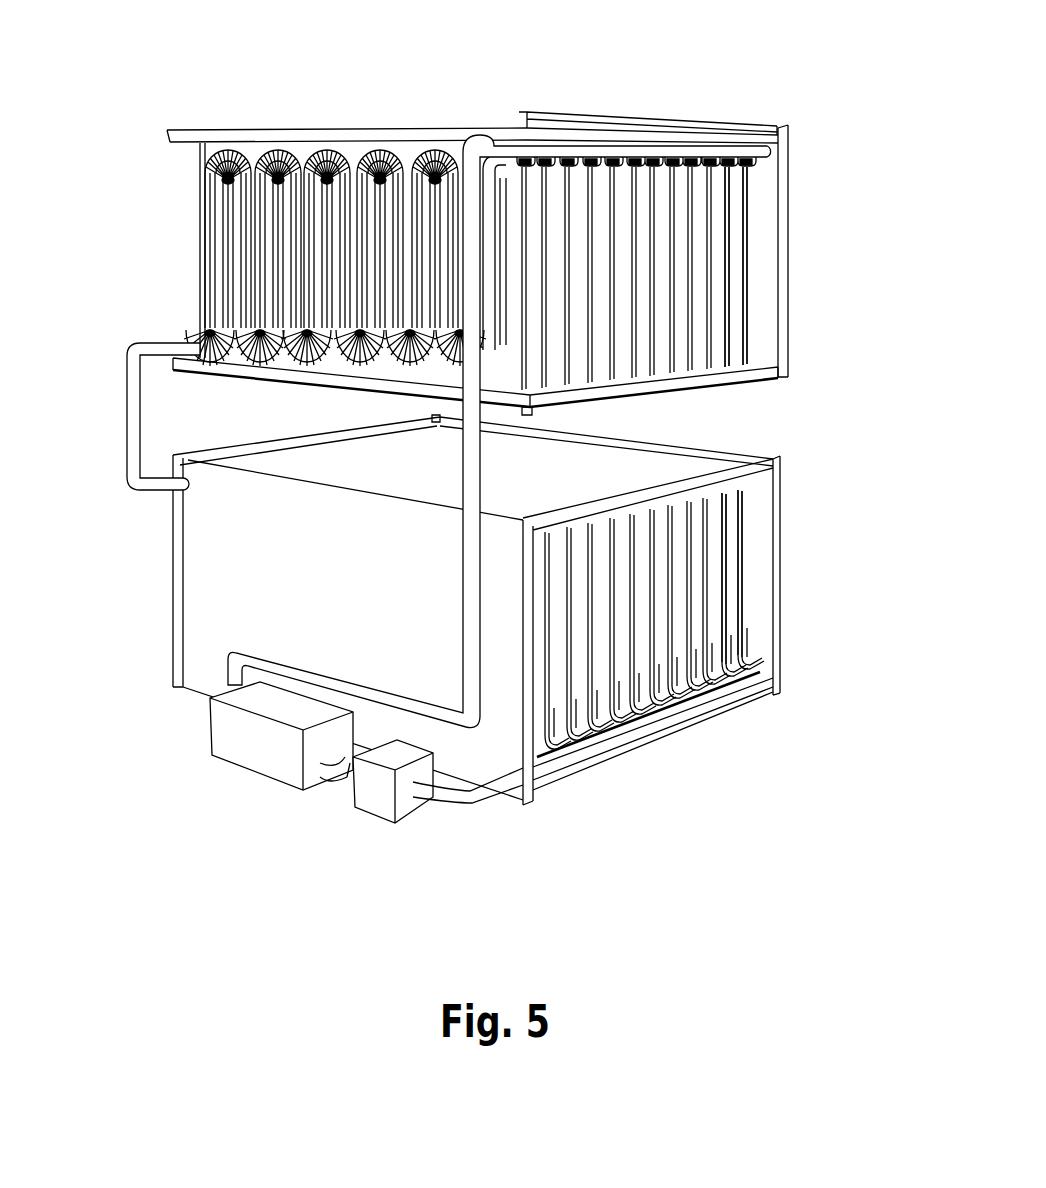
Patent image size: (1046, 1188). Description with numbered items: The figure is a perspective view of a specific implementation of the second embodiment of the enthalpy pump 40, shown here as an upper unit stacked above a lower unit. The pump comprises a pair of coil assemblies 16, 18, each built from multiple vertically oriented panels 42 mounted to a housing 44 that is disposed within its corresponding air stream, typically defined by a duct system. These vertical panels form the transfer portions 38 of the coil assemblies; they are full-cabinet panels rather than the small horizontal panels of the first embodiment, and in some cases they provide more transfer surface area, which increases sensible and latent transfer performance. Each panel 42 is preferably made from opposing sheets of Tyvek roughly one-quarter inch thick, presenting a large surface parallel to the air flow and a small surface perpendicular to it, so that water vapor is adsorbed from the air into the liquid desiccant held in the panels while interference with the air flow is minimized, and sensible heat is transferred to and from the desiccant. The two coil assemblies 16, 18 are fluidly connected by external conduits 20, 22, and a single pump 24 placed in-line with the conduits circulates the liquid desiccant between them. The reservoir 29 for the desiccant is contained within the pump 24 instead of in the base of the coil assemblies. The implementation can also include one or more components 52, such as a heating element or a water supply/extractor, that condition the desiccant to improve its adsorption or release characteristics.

The enthalpy pump 40 is at (362, 46).
The coil assembly 16 is at (667, 127).
The coil assembly 18 is at (595, 512).
The external conduit 20 is at (473, 647).
The external conduit 22 is at (137, 450).
The pump 24 is at (405, 803).
The reservoir 29 is at (373, 805).
The transfer portions 38 is at (524, 188).
The panel 42 is at (748, 334).
The housing 44 is at (792, 300).
The component 52 is at (257, 758).